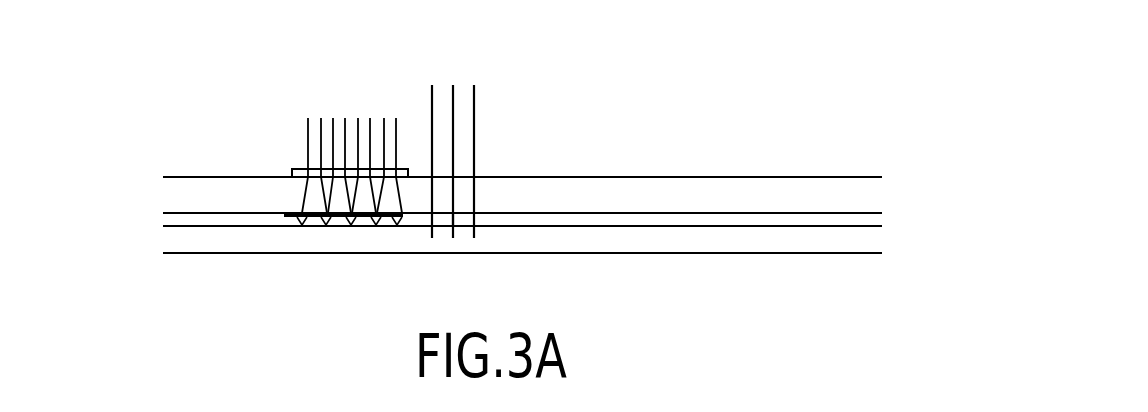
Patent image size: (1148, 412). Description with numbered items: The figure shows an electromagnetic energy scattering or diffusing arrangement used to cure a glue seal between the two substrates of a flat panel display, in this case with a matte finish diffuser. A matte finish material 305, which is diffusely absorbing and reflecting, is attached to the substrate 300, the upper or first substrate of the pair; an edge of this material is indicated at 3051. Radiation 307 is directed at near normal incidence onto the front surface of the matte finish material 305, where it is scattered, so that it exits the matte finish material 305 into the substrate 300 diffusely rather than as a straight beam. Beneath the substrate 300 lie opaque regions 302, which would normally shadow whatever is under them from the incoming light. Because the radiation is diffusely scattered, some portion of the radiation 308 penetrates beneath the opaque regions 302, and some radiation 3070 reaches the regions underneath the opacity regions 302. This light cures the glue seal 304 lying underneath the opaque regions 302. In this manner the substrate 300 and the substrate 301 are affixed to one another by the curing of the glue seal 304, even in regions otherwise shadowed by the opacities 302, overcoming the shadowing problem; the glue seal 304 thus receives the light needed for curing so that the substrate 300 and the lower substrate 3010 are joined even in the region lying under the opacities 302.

The substrate 300 is at (552, 177).
The substrate 301 is at (345, 254).
The opaque regions 302 is at (283, 217).
The glue seal 304 is at (455, 226).
The matte finish material 305 is at (408, 174).
The chip edge 3051 is at (292, 176).
The radiation 307 is at (352, 138).
The radiation 308 is at (288, 219).
The substrate 3010 is at (676, 253).
The radiation 3070 is at (283, 195).